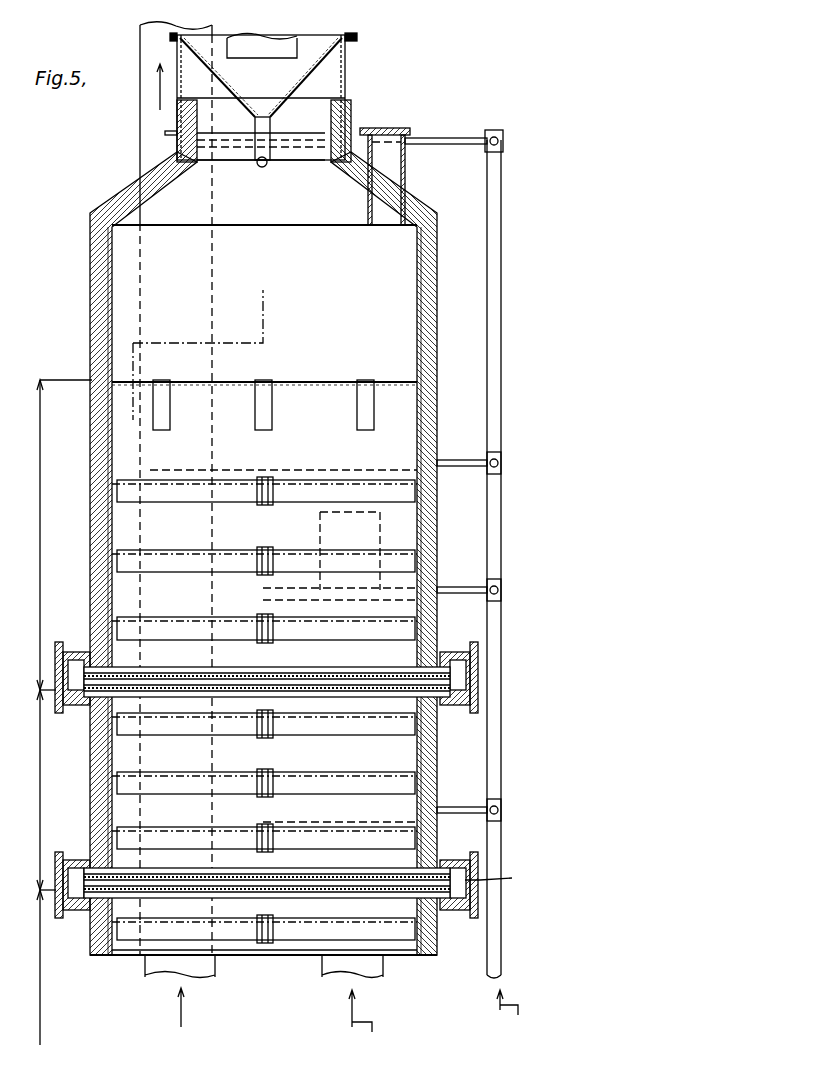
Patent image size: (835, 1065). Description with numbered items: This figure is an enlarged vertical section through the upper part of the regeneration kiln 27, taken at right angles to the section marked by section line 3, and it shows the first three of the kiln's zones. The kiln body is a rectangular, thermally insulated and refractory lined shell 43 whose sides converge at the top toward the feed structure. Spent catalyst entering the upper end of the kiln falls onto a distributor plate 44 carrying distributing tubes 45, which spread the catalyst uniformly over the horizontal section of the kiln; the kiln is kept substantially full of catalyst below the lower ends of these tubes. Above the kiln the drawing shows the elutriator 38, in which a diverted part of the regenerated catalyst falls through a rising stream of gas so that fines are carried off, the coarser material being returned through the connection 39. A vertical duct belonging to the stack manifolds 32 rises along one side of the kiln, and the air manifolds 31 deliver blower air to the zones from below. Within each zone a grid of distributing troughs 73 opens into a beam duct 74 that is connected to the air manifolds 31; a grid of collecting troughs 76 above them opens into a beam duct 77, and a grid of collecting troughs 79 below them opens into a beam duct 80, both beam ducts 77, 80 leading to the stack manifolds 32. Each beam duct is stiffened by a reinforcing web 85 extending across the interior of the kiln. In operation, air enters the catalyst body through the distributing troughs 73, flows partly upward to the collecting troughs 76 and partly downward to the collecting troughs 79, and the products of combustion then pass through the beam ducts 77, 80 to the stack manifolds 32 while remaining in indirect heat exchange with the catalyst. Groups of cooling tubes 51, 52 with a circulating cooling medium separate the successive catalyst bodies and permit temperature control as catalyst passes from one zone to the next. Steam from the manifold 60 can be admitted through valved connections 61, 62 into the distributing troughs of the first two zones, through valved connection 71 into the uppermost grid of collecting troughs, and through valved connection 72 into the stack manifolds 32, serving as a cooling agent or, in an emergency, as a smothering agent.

The section line 3- 3 is at (222, 25).
The kiln 27 is at (120, 188).
The air manifolds 31 is at (365, 972).
The stack manifolds 32 is at (140, 121).
The elutriator 38 is at (258, 60).
The return connection 39 is at (261, 167).
The shell 43 is at (90, 312).
The distributor plate 44 is at (232, 382).
The distributing tubes 45 is at (170, 412).
The cooling tubes 51 is at (308, 672).
The cooling tubes 52 is at (380, 875).
The steam manifold 60 is at (501, 437).
The valved steam connection 61 is at (458, 586).
The valved steam connection 62 is at (458, 806).
The valved steam connection 71 is at (458, 460).
The valved steam connection 72 is at (430, 136).
The distributing troughs 73 is at (150, 550).
The beam duct 74 is at (274, 548).
The upper collecting troughs 76 is at (152, 480).
The beam duct 77 is at (258, 478).
The lower collecting troughs 79 is at (150, 617).
The beam duct 80 is at (274, 616).
The reinforcing web 85 is at (258, 558).